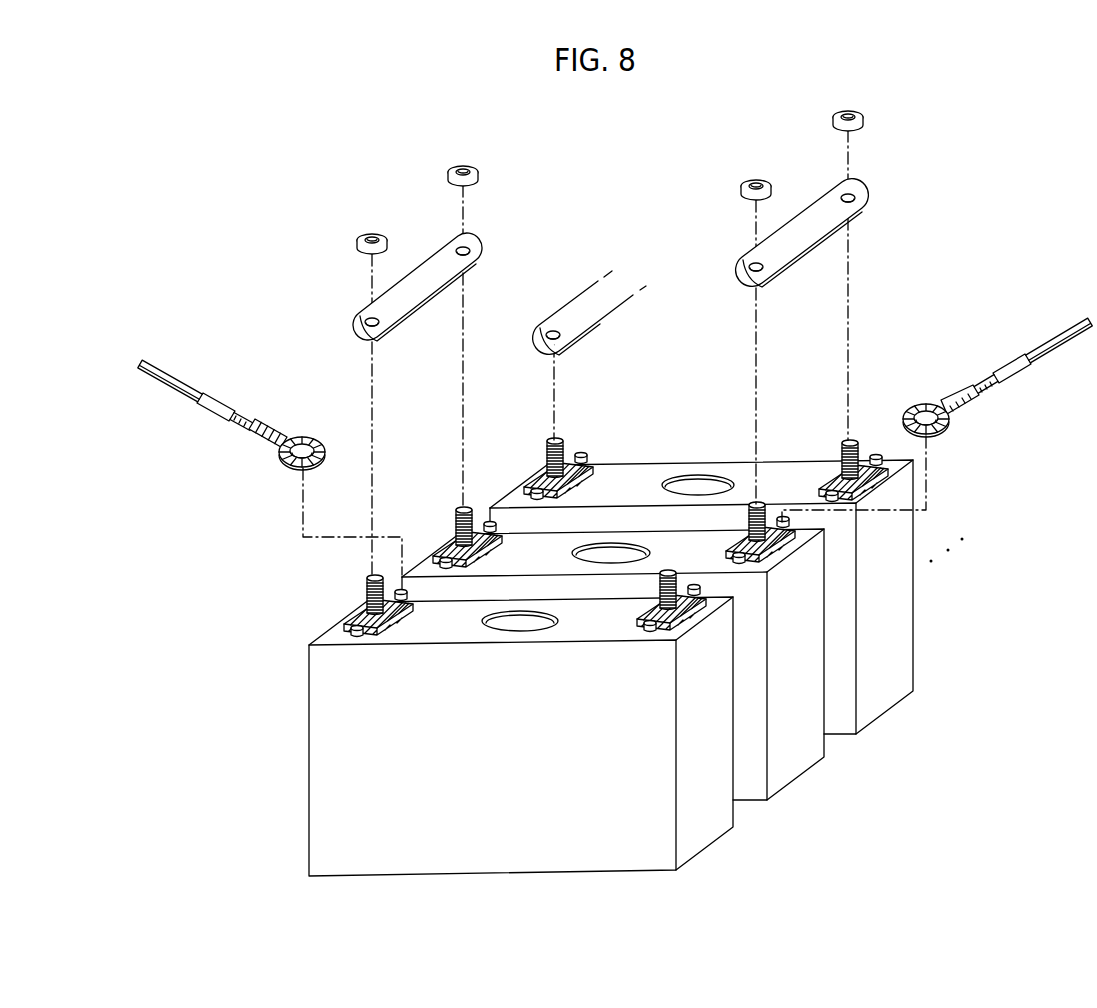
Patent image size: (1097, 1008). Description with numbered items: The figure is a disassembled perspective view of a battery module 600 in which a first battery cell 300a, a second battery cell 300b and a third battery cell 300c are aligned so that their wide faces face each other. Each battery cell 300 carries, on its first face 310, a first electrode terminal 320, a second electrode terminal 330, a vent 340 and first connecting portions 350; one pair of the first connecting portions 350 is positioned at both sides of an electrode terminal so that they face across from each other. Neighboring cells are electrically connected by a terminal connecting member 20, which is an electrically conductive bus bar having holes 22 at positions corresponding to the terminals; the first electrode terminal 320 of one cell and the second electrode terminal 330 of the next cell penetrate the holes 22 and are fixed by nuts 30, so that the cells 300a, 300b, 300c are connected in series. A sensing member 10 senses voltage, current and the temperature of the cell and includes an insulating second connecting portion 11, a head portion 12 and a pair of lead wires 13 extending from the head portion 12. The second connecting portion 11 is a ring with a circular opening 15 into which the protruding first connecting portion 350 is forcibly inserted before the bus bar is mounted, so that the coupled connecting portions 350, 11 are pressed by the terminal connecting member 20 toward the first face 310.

The sensing member 10 is at (188, 352).
The second connecting portion 11 is at (607, 431).
The head portion 12 is at (286, 440).
The lead wires 13 is at (205, 386).
The opening 15 is at (312, 444).
The terminal connecting member 20 is at (820, 196).
The holes 22 is at (382, 303).
The nuts 30 is at (860, 105).
The battery cell 300 is at (650, 649).
The first battery cell 300a is at (705, 852).
The second battery cell 300b is at (799, 780).
The third battery cell 300c is at (736, 569).
The first face 310 is at (624, 478).
The first electrode terminal 320 is at (762, 503).
The second electrode terminal 330 is at (462, 506).
The vent 340 is at (704, 486).
The first connecting portion 350 is at (582, 458).
The module 600 is at (451, 207).